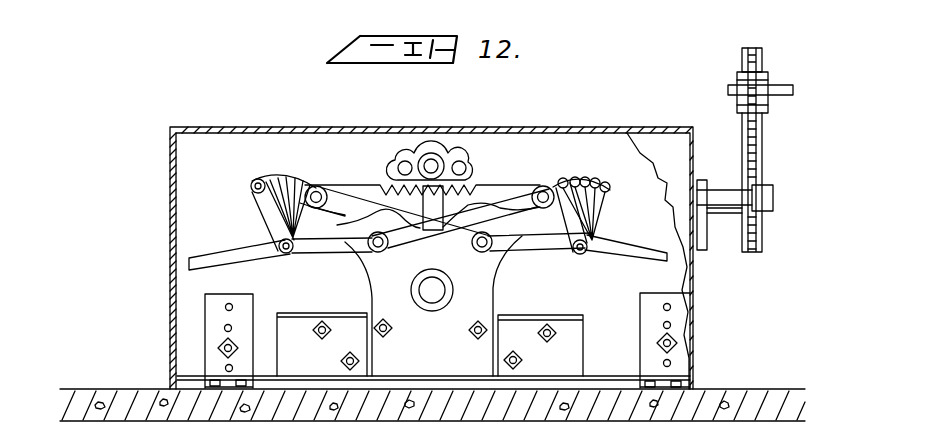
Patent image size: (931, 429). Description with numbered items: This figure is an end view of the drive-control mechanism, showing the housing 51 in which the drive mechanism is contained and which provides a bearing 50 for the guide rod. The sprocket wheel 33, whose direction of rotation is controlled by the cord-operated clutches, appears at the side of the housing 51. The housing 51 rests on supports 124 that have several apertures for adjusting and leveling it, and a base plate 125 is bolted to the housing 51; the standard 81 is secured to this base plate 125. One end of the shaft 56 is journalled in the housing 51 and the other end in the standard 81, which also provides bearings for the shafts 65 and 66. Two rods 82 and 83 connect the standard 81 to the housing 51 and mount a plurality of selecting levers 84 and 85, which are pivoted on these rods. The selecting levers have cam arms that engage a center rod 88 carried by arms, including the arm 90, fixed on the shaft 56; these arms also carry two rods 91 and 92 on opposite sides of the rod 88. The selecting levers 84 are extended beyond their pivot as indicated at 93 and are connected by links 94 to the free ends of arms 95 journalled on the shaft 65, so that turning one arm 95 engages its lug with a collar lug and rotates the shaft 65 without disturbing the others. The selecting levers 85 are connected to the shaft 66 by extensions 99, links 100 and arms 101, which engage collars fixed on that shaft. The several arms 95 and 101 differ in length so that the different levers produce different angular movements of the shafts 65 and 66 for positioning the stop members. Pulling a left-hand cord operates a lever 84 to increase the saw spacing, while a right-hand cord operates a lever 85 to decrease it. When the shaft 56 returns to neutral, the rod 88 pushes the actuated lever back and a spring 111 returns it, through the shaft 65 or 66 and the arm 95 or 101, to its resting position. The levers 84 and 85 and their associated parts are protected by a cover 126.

The sprocket wheel 33 is at (758, 251).
The bearing 50 is at (776, 199).
The housing 51 is at (201, 206).
The shaft 56 is at (436, 283).
The shaft 65 is at (537, 204).
The shaft 66 is at (326, 205).
The standard 81 is at (374, 287).
The rod 82 is at (478, 250).
The rod 83 is at (381, 251).
The selecting lever 84 is at (207, 263).
The selecting lever 85 is at (642, 257).
The center rod 88 is at (429, 164).
The arm 90 is at (500, 254).
The rod 91 is at (403, 166).
The rod 92 is at (458, 165).
The extension 93 is at (553, 248).
The link 94 is at (595, 229).
The arm 95 is at (558, 182).
The extension 99 is at (305, 256).
The link 100 is at (268, 220).
The arm 101 is at (282, 174).
The spring 111 is at (392, 181).
The support 124 is at (229, 293).
The base plate 125 is at (575, 332).
The cover 126 is at (505, 127).